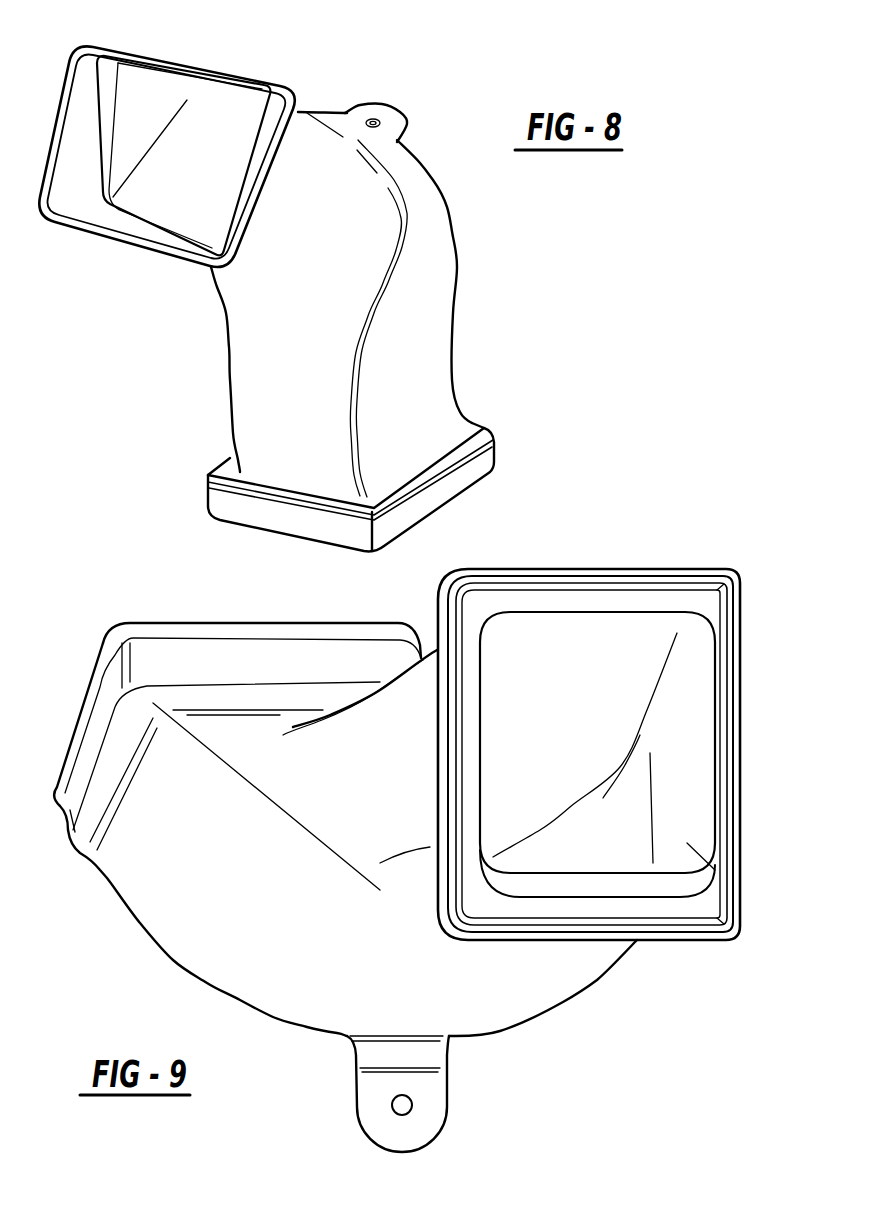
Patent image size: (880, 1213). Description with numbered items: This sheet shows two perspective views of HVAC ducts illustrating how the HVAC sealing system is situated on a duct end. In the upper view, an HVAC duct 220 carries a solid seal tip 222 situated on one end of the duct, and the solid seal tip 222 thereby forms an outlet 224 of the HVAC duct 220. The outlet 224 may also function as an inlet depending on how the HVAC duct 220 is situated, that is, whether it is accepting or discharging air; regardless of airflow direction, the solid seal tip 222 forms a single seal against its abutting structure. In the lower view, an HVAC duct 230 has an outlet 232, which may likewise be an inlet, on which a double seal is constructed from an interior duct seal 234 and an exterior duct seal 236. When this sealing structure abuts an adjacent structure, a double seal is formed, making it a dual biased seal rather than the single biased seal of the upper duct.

In FIG. 8, the HVAC duct 220 is at (425, 165).
In FIG. 8, the solid seal tip 222 is at (93, 36).
In FIG. 8, the outlet 224 is at (72, 120).
In FIG. 9, the HVAC duct 230 is at (567, 1003).
In FIG. 9, the outlet 232 is at (717, 697).
In FIG. 9, the interior duct seal 234 is at (650, 580).
In FIG. 9, the exterior duct seal 236 is at (702, 570).